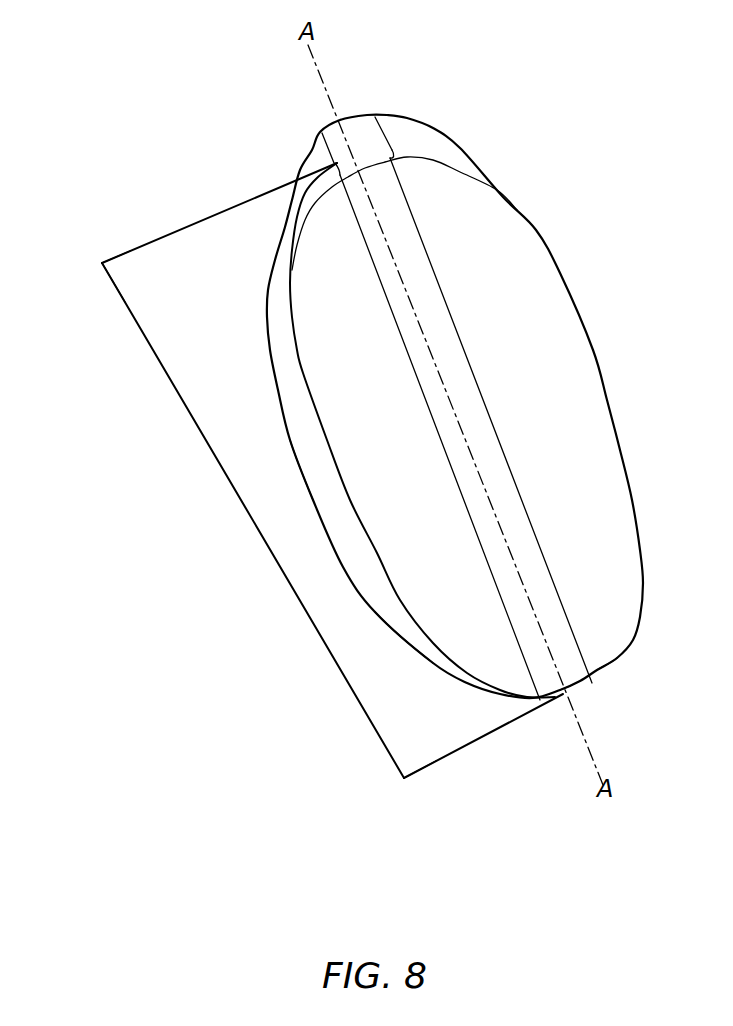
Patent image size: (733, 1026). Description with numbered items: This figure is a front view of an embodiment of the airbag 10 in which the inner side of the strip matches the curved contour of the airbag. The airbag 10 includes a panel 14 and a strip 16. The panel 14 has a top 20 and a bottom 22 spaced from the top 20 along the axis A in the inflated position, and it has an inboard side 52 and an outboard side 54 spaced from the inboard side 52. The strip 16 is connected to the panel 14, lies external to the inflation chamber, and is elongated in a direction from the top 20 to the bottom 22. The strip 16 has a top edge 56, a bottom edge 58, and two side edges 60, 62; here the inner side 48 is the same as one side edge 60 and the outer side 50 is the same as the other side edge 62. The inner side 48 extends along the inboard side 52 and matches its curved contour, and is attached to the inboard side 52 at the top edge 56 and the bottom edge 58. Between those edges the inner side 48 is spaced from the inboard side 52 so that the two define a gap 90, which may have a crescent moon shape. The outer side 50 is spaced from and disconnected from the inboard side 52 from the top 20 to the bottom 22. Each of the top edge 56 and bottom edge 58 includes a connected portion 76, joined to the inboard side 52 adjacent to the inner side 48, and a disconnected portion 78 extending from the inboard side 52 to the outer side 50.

The airbag 10 is at (612, 71).
The panel 14 is at (597, 681).
The strip 16 is at (180, 427).
The top 20 is at (362, 126).
The bottom 22 is at (586, 689).
The inner side 48 is at (303, 470).
The outer side 50 is at (117, 287).
The inboard side 52 is at (291, 299).
The outboard side 54 is at (593, 350).
The top edge 56 is at (192, 222).
The bottom edge 58 is at (431, 768).
The side edge 60 is at (393, 630).
The side edge 62 is at (282, 575).
The connected portion 76 is at (333, 162).
The disconnected portion 78 is at (118, 252).
The gap 90 is at (356, 545).